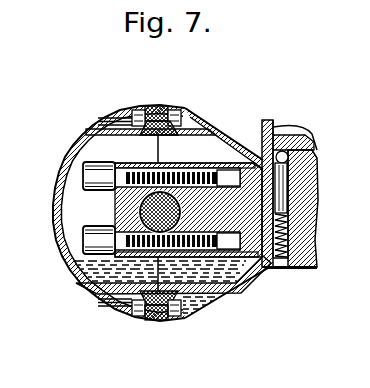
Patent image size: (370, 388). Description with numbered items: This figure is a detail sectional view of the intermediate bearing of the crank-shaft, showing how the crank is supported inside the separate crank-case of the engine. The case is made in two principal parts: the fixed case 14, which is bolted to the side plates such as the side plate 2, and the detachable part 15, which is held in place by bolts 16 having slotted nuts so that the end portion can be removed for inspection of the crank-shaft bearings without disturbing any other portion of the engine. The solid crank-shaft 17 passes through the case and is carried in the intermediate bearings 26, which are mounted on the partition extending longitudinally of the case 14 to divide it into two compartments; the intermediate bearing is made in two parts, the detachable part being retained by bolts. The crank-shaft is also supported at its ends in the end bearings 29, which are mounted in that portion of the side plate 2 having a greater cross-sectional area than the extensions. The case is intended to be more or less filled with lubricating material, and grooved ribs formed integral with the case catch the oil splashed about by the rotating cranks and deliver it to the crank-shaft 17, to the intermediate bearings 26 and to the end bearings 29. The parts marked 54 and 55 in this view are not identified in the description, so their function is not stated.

The detachable part of the case 15 is at (57, 176).
The bolts 16 is at (134, 311).
The crank-shaft 17 is at (179, 168).
The end bearings 29 is at (116, 209).
The case 14 is at (299, 268).
The cap 54 is at (287, 140).
The spring-loaded plunger 55 is at (284, 192).
The intermediate bearings 26 is at (369, 229).
The side plate 2 is at (366, 270).